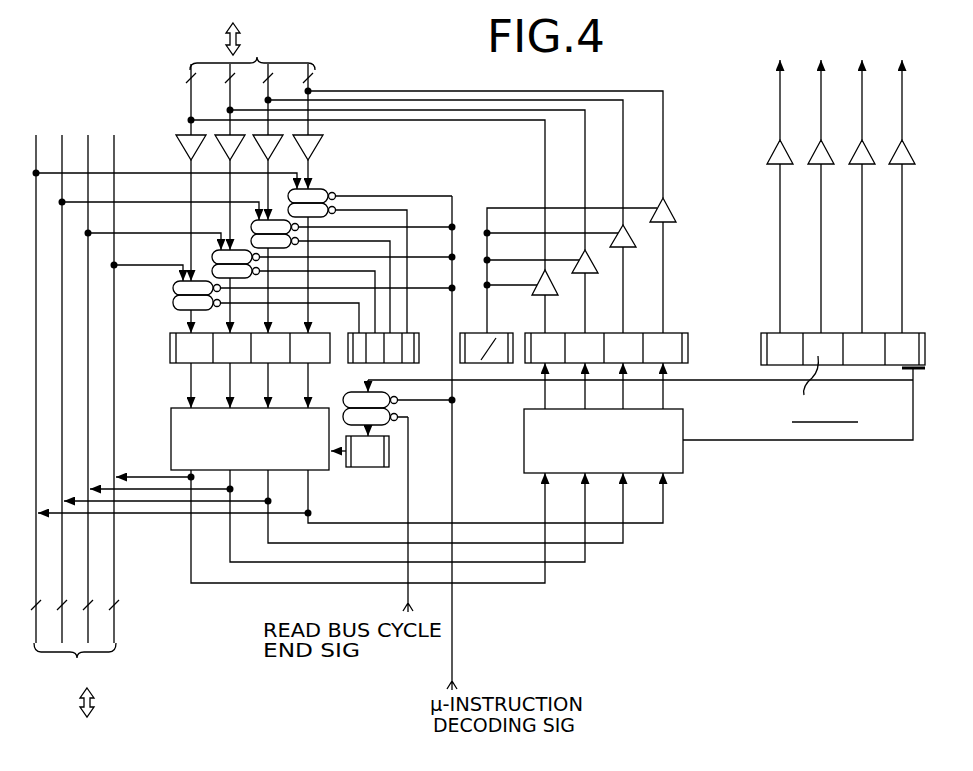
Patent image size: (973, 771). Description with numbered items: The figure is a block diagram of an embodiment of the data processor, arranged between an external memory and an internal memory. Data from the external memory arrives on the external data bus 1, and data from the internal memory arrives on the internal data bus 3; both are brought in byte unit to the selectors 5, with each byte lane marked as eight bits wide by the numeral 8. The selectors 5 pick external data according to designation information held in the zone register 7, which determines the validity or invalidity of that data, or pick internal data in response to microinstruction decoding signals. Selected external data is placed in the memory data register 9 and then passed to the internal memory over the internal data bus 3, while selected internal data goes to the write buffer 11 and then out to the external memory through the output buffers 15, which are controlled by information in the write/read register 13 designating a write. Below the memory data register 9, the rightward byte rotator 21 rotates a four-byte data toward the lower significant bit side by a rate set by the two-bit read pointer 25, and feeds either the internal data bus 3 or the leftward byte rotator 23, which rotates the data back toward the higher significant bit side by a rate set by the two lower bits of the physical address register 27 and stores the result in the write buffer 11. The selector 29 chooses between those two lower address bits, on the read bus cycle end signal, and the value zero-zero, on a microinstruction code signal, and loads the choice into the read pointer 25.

The external data bus 1 is at (259, 50).
The internal data bus 3 is at (165, 426).
The selectors 5 is at (312, 189).
The zone register 7 is at (420, 345).
The 8-bit data lines 8 is at (178, 344).
The memory data register 9 is at (170, 346).
The write buffer 11 is at (690, 345).
The write/read register 13 is at (501, 333).
The output buffers 15 is at (551, 296).
The rightward byte rotator 21 is at (171, 436).
The leftward byte rotator 23 is at (524, 441).
The read pointer 25 is at (370, 467).
The physical address register 27 is at (927, 345).
The selector 29 is at (396, 397).